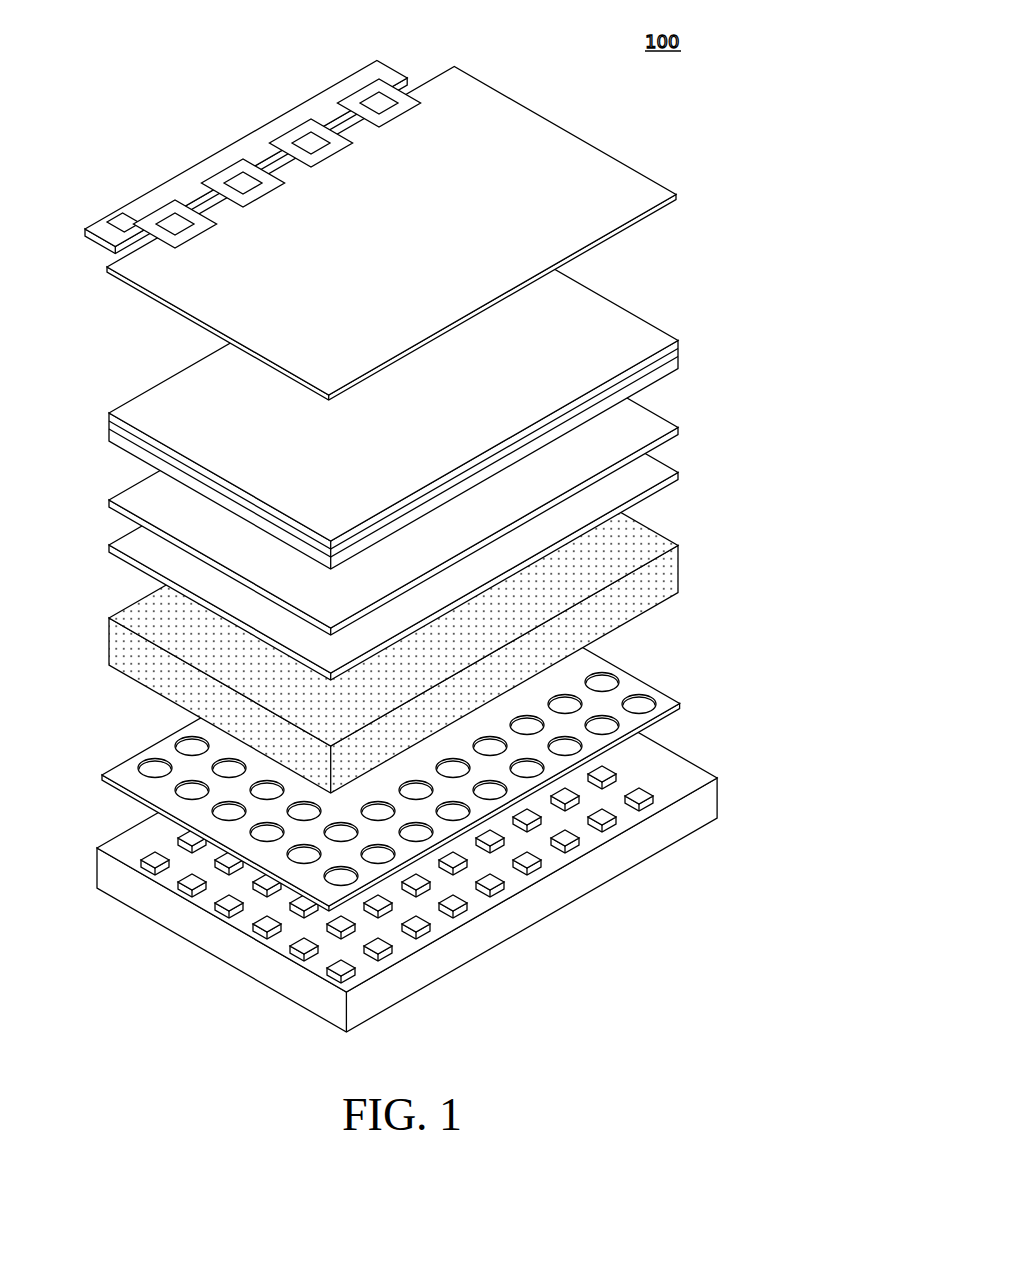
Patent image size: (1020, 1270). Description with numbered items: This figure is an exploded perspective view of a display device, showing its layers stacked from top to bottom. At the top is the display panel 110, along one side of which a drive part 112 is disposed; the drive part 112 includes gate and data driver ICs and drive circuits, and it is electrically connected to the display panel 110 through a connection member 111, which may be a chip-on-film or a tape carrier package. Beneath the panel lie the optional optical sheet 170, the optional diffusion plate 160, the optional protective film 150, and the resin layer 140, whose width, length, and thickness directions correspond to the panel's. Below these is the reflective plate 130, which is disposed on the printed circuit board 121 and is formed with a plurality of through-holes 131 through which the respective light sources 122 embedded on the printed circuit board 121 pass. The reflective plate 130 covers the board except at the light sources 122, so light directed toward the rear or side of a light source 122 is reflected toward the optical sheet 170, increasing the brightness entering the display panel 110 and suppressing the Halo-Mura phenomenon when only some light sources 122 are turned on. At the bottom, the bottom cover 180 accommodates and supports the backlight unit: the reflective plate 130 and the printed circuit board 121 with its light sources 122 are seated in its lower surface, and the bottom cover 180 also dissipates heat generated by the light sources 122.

The display panel 110 is at (676, 195).
The connection member 111 is at (350, 93).
The drive part 112 is at (371, 82).
The printed circuit board 121 is at (661, 795).
The light sources 122 is at (633, 795).
The reflective plate 130 is at (429, 742).
The through-holes 131 is at (614, 682).
The resin layer 140 is at (680, 575).
The protective film 150 is at (678, 474).
The diffusion plate 160 is at (678, 431).
The optical sheet 170 is at (678, 342).
The bottom cover 180 is at (443, 833).